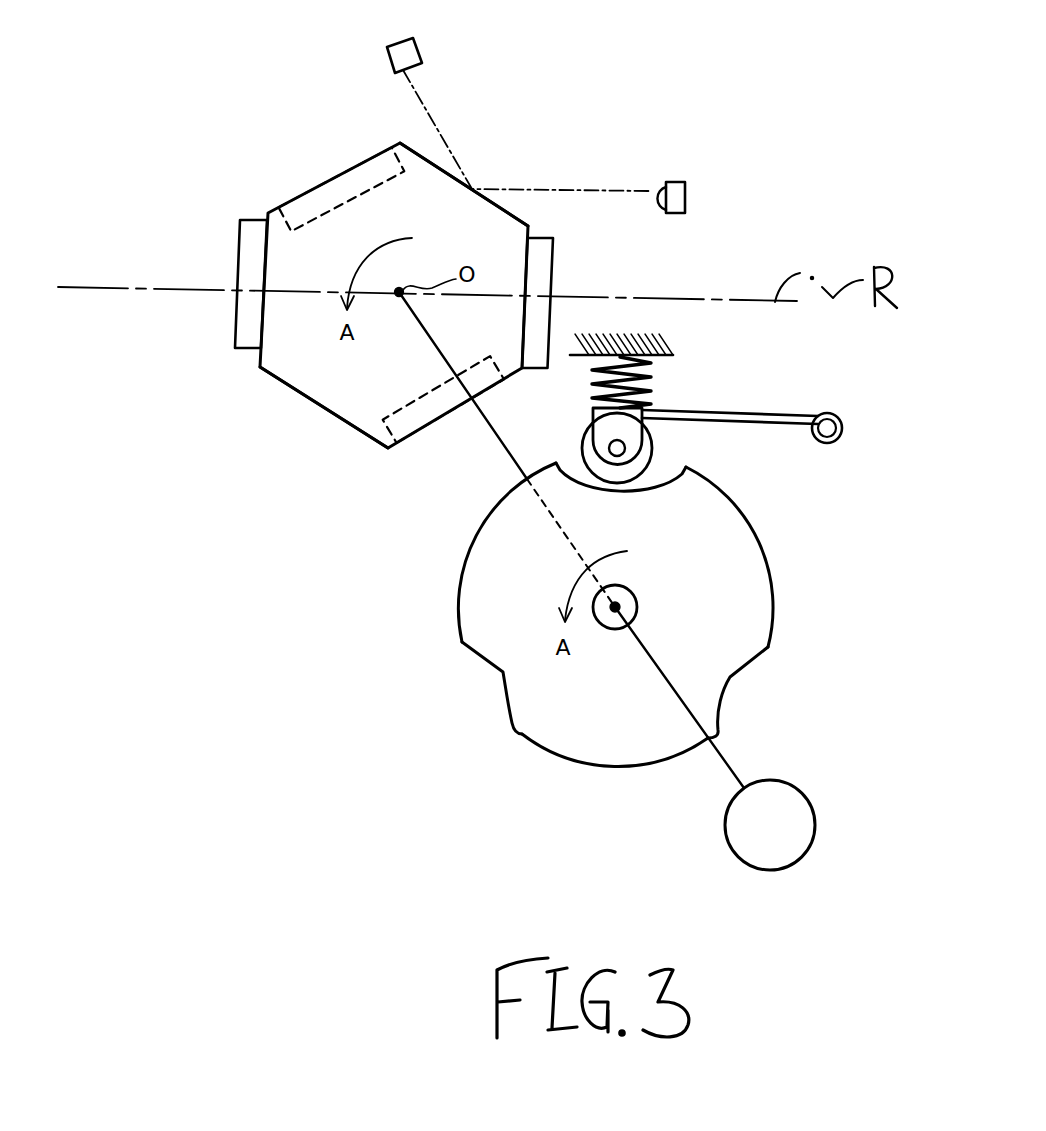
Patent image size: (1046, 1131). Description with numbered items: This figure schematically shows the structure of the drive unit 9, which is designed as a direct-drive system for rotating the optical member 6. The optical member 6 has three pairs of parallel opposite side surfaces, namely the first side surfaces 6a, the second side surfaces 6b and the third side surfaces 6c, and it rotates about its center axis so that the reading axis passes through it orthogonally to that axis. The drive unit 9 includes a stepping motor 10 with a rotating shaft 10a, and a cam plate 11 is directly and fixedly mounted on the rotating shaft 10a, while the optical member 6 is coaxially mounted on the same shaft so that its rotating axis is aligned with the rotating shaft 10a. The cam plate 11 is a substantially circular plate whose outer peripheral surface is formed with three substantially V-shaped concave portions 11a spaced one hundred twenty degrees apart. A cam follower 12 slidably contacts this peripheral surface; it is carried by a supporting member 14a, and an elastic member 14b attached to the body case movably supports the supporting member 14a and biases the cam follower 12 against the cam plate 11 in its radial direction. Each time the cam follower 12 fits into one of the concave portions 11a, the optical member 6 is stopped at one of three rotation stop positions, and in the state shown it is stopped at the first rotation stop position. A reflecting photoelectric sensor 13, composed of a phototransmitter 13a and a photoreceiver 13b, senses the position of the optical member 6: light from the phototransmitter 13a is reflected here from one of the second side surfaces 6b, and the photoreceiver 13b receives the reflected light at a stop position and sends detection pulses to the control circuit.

The optical member 6 is at (258, 185).
The first side surfaces 6a is at (233, 262).
The second side surfaces 6b is at (427, 158).
The third side surfaces 6c is at (337, 213).
The drive unit 9 is at (788, 743).
The stepping motor 10 is at (733, 848).
The rotating shaft 10a is at (720, 757).
The cam plate 11 is at (780, 550).
The concave portions 11a is at (580, 470).
The cam follower 12 is at (651, 452).
The reflecting photoelectric sensor 13 is at (612, 138).
The phototransmitter 13a is at (687, 202).
The photoreceiver 13b is at (415, 43).
The supporting member 14a is at (852, 462).
The elastic member 14b is at (650, 377).